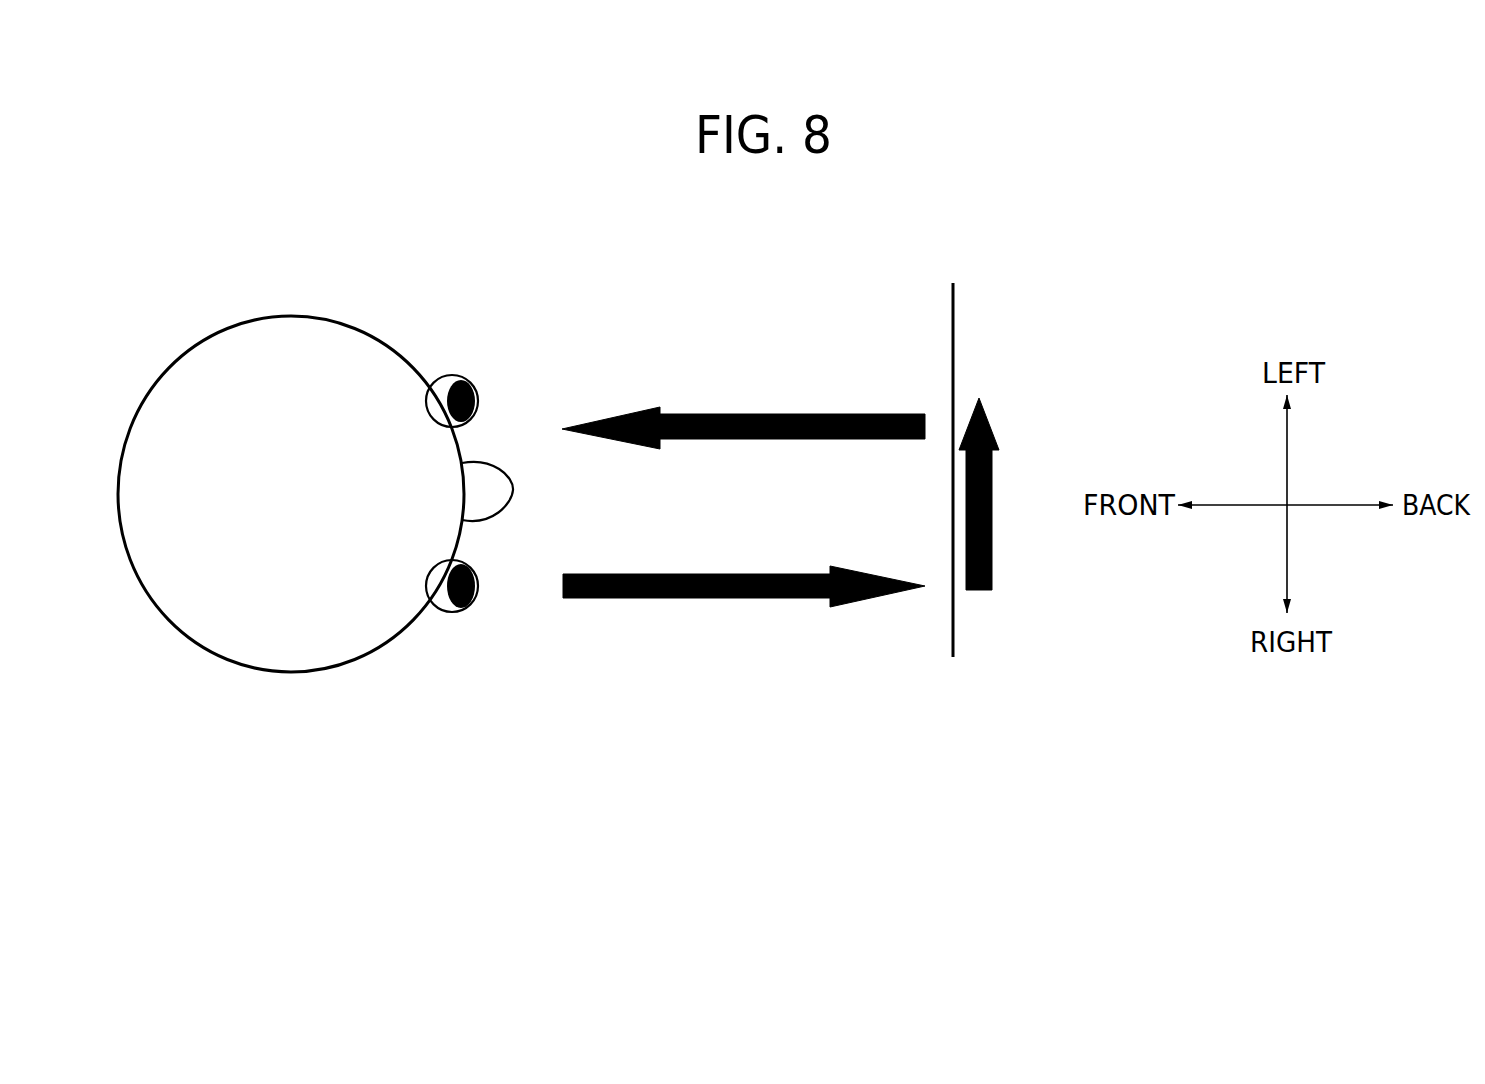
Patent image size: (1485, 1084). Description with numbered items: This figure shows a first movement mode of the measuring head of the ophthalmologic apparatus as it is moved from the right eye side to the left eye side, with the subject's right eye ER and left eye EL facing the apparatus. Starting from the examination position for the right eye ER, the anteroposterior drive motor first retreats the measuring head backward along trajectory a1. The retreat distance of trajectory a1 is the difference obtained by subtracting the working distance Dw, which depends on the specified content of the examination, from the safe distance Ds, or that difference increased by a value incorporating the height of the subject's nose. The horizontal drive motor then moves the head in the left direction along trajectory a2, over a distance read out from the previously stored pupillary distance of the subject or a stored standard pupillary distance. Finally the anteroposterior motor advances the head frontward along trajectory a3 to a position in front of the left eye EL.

The left eye of user EL is at (448, 375).
The right eye of user ER is at (445, 612).
The trajectory a1 is at (720, 602).
The trajectory a2 is at (992, 430).
The trajectory a3 is at (763, 410).
The working distance Dw is at (572, 490).
The safe distance Ds is at (952, 508).